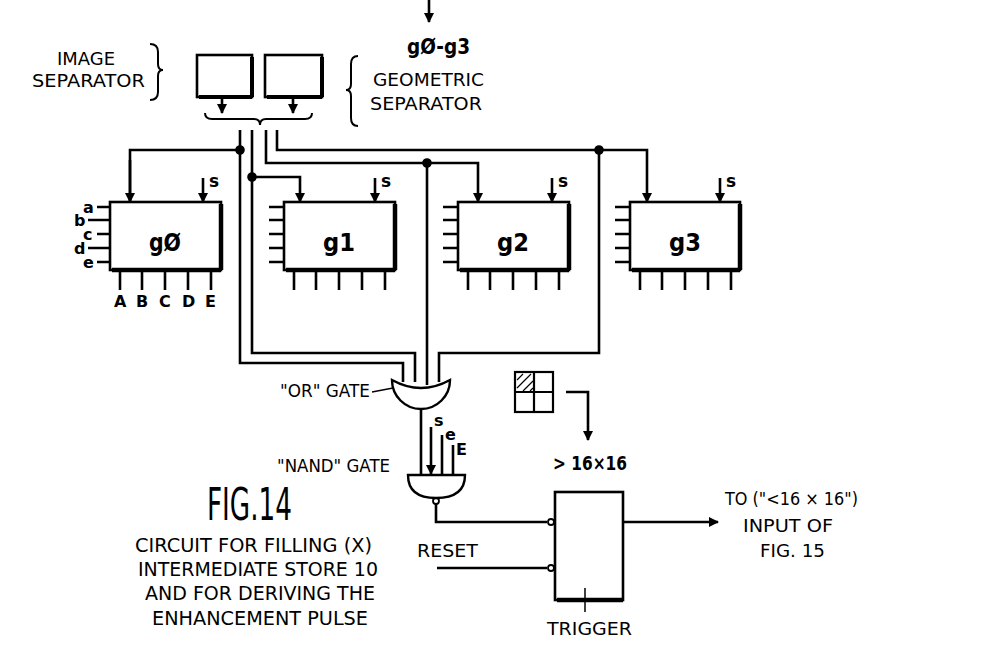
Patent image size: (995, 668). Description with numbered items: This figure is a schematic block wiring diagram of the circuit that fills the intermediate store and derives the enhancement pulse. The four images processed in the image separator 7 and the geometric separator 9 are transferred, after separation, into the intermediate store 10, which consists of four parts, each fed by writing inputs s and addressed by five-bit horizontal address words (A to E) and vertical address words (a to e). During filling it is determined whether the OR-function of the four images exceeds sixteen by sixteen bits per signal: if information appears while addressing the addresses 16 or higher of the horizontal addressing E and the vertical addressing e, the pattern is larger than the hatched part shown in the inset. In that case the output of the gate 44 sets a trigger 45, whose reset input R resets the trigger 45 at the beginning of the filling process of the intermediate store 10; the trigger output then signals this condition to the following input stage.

The image separator 7 is at (211, 77).
The geometric separator 9 is at (302, 80).
The intermediate store 10 is at (236, 371).
The address 16 is at (523, 403).
The gate 44 is at (428, 486).
The trigger 45 is at (610, 563).